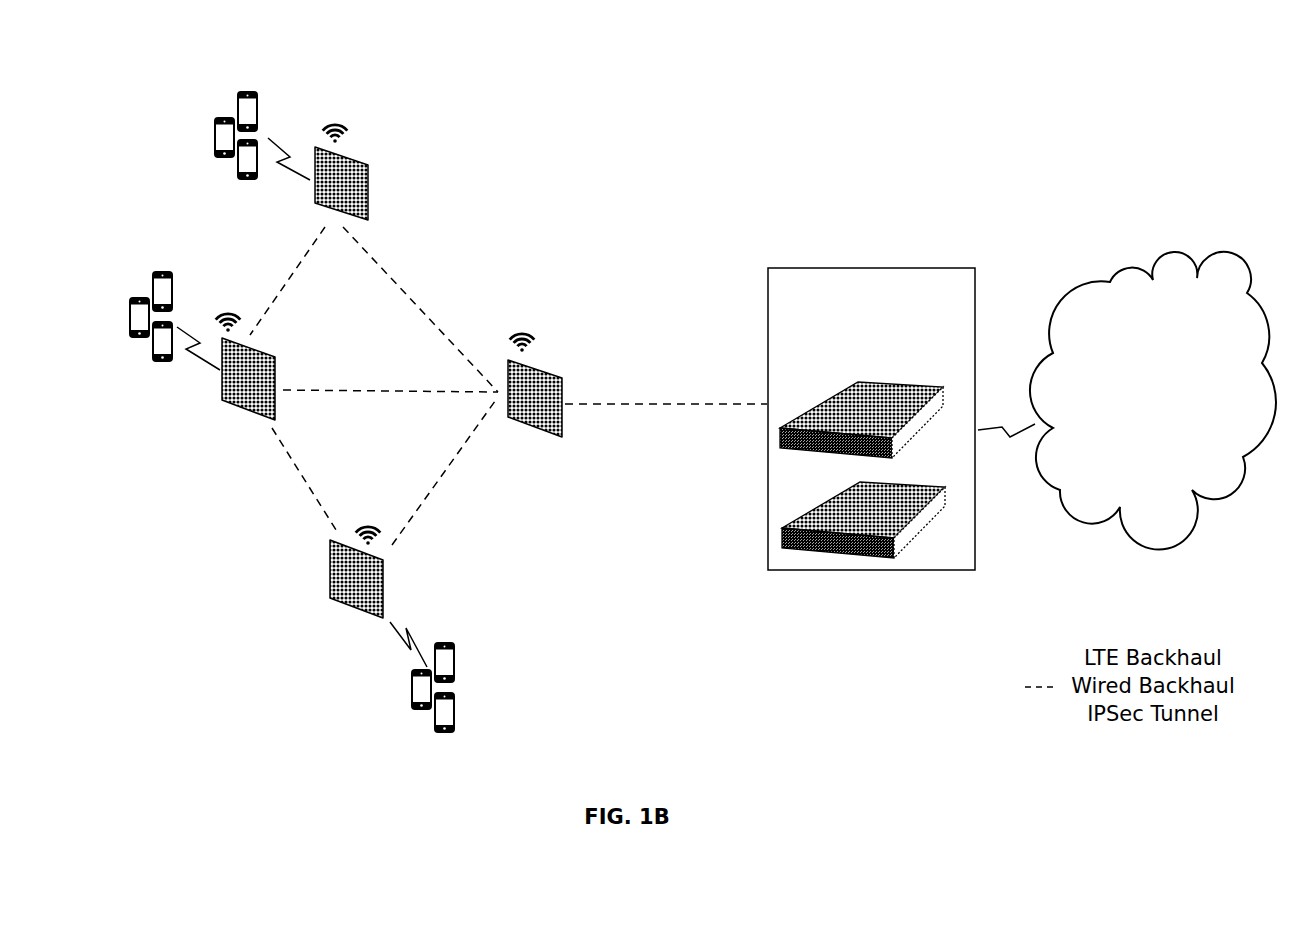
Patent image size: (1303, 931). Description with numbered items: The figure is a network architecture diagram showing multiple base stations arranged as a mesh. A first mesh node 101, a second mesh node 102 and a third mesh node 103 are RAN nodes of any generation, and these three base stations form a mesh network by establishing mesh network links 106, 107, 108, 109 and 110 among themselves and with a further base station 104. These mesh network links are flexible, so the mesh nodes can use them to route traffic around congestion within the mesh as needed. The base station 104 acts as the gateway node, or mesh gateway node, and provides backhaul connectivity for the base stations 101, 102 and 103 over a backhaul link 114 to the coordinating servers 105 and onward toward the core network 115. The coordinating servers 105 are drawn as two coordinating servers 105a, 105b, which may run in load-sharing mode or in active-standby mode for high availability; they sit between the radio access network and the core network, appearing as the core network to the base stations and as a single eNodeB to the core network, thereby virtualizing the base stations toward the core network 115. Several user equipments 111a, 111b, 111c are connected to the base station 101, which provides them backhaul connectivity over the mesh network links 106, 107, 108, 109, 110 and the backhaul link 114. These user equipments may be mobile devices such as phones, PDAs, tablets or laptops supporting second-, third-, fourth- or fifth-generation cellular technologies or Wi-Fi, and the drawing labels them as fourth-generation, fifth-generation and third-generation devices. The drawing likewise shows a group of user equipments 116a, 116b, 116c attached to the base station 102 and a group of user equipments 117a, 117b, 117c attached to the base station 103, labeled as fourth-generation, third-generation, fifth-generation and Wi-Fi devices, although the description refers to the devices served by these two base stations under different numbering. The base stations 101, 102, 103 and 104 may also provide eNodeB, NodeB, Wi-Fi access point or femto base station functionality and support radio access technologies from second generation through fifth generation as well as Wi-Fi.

The mesh node 1 101 is at (360, 158).
The mesh node 2 102 is at (222, 407).
The mesh node 3 103 is at (342, 617).
The base station 104 is at (550, 368).
The coordinating servers 105 is at (821, 386).
The coordinating server 105a is at (923, 382).
The coordinating server 105b is at (920, 482).
The mesh network link 106 is at (290, 295).
The mesh network link 107 is at (432, 318).
The mesh network link 108 is at (295, 473).
The mesh network link 109 is at (457, 468).
The mesh network link 110 is at (387, 387).
The user equipment 111a is at (212, 123).
The user equipment 111b is at (237, 180).
The user equipment 111c is at (262, 110).
The backhaul link 114 is at (683, 413).
The core network 115 is at (1153, 257).
The 4G UE 116a is at (127, 318).
The 3G UE 116b is at (160, 270).
The 5G UE 116c is at (152, 352).
The Wi-Fi UE 117a is at (410, 682).
The 3G UE 117b is at (445, 738).
The 4G UE 117c is at (443, 640).